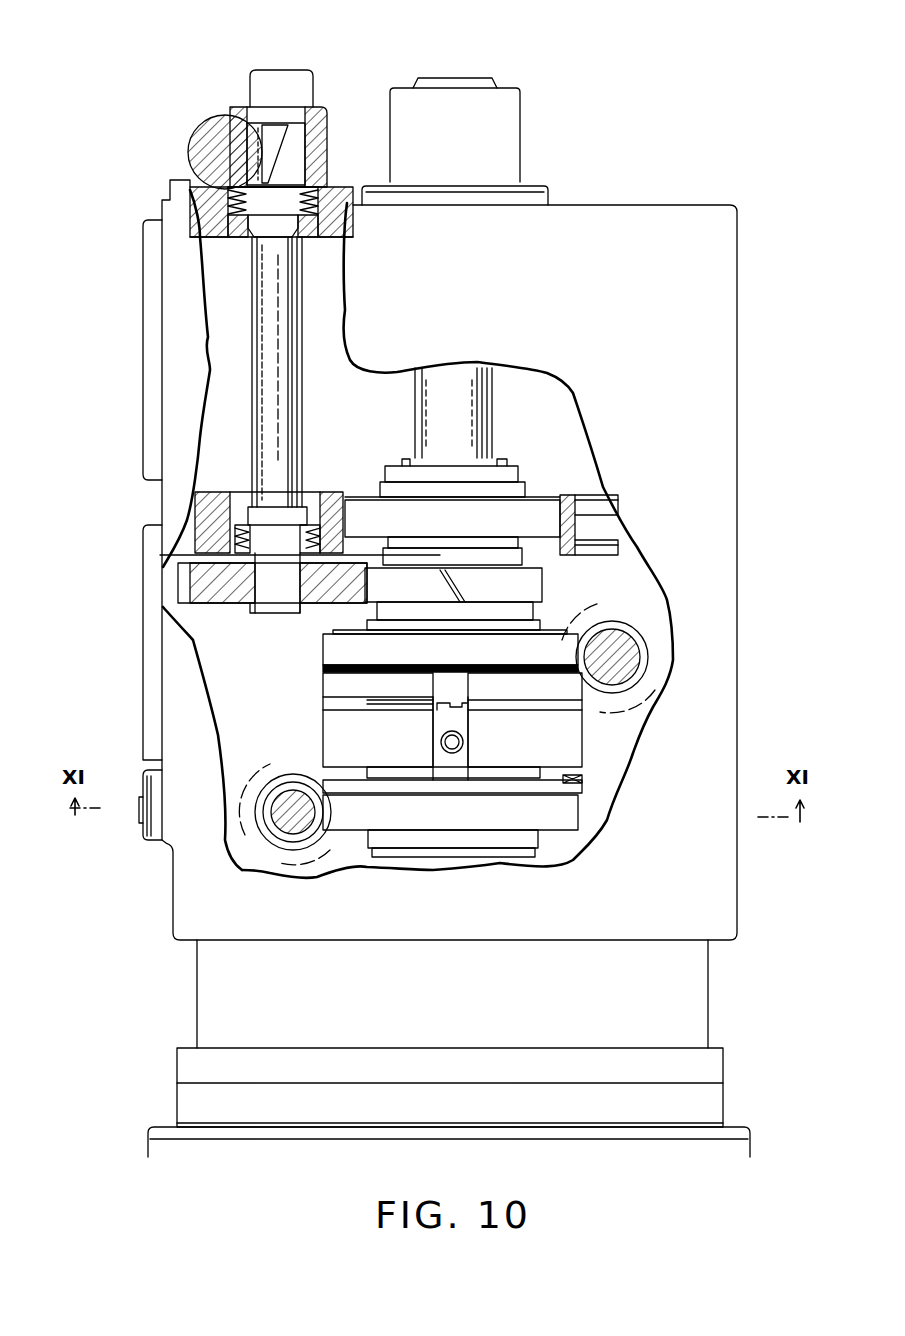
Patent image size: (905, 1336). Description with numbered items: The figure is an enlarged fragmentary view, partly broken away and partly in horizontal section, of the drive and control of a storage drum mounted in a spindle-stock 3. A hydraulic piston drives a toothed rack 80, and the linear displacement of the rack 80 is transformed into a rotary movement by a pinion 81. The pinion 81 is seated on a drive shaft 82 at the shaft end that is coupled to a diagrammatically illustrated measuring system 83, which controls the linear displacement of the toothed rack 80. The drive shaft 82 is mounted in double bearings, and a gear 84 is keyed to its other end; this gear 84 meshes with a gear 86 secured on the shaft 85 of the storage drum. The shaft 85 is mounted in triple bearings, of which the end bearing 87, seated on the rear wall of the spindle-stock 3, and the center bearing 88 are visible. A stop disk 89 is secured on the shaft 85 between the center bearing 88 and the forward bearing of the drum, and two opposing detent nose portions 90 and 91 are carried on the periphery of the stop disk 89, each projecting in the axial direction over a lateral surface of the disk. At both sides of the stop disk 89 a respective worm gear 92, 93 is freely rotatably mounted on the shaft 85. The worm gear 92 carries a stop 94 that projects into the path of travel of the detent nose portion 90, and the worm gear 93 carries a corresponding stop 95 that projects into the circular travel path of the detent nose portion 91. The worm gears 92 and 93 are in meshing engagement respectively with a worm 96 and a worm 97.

The spindle-stock 3 is at (712, 290).
The toothed rack 80 is at (222, 145).
The pinion 81 is at (295, 145).
The drive shaft 82 is at (262, 385).
The measuring system 83 is at (263, 95).
The gear 84 is at (205, 604).
The shaft 85 is at (478, 413).
The gear 86 is at (530, 583).
The end bearing 87 is at (418, 90).
The center bearing 88 is at (530, 512).
The stop disk 89 is at (570, 742).
The detent nose portion 90 is at (460, 705).
The detent nose portion 91 is at (445, 775).
The worm gear 92 is at (330, 656).
The worm gear 93 is at (568, 822).
The stop 94 is at (430, 712).
The stop 95 is at (578, 778).
The worm 96 is at (636, 635).
The worm 97 is at (290, 835).